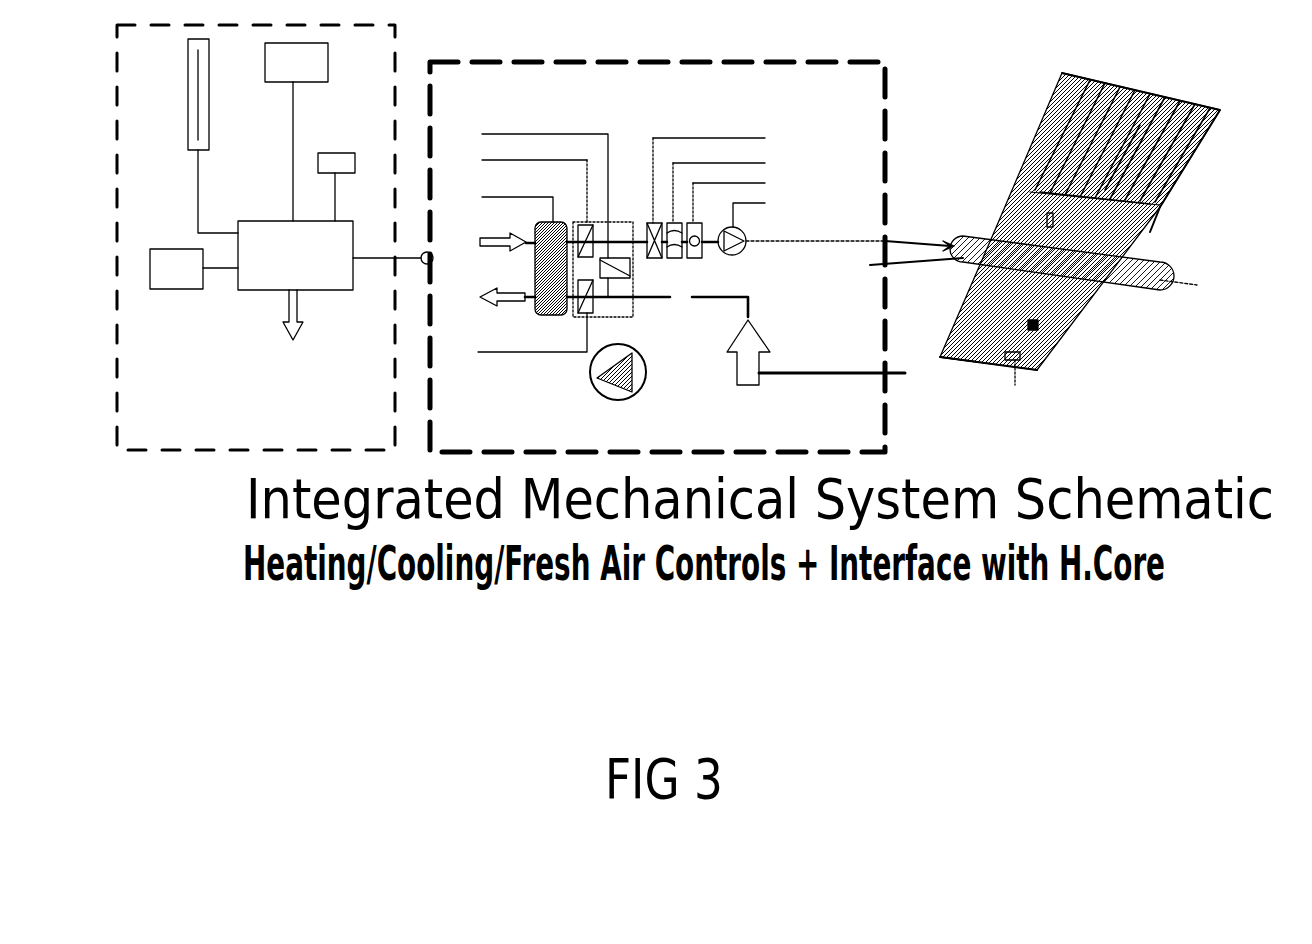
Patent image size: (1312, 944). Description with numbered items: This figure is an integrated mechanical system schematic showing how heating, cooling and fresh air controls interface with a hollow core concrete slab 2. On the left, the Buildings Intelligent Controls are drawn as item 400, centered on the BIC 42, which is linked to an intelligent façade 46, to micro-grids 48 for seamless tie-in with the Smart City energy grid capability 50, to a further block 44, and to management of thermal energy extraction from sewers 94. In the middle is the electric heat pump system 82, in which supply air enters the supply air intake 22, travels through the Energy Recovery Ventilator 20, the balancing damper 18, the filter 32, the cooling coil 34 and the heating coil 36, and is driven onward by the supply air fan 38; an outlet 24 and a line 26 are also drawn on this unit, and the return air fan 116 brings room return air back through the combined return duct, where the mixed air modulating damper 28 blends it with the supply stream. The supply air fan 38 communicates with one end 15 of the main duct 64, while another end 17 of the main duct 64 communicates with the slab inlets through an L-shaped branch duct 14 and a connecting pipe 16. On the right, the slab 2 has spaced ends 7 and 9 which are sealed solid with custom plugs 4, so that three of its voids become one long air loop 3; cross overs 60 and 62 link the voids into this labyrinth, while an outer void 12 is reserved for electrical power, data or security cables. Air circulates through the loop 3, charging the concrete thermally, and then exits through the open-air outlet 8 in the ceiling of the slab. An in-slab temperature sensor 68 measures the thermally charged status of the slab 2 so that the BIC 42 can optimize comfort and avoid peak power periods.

The BIC controls item 400 is at (163, 454).
The user interface / thermostat 44 is at (296, 132).
The intelligent façade 46 is at (209, 135).
The Smart City energy grid capability 50 is at (336, 173).
The BIC 42 is at (335, 255).
The micro-grids 48 is at (194, 269).
The sewers 94 is at (293, 333).
The electric heat pump system 82 is at (718, 53).
The mixed air modulating damper 28 is at (534, 184).
The balancing damper 18 is at (526, 205).
The Energy Recovery Ventilator 20 is at (513, 252).
The supply air intake 22 is at (497, 242).
The exhaust air outlet 24 is at (497, 297).
The return water line 26 is at (526, 319).
The filter 32 is at (717, 197).
The cooling coil 34 is at (727, 207).
The heating coil 36 is at (737, 217).
The supply air fan 38 is at (753, 225).
The return air fan 116 is at (735, 383).
The main duct 64 is at (872, 238).
The end of main duct 15 is at (894, 268).
The hollow core slab 2 is at (1005, 199).
The slab end 9 is at (1185, 103).
The void 12 is at (1050, 147).
The custom plugs 4 is at (1047, 115).
The cross over 62 is at (1137, 120).
The L-shaped branch duct 14 is at (1040, 228).
The core pipe 16 is at (1047, 213).
The air loop 3 is at (995, 317).
The another end of main duct 17 is at (1043, 253).
The in-slab temperature sensor 68 is at (1043, 332).
The cross over 60 is at (978, 355).
The ceiling outlet 8 is at (1013, 357).
The slab end 7 is at (1018, 372).